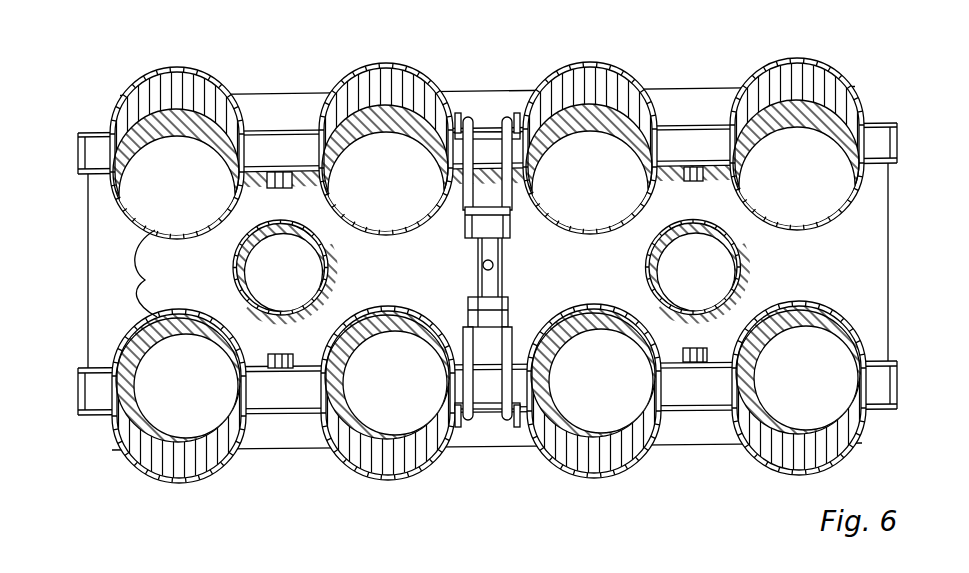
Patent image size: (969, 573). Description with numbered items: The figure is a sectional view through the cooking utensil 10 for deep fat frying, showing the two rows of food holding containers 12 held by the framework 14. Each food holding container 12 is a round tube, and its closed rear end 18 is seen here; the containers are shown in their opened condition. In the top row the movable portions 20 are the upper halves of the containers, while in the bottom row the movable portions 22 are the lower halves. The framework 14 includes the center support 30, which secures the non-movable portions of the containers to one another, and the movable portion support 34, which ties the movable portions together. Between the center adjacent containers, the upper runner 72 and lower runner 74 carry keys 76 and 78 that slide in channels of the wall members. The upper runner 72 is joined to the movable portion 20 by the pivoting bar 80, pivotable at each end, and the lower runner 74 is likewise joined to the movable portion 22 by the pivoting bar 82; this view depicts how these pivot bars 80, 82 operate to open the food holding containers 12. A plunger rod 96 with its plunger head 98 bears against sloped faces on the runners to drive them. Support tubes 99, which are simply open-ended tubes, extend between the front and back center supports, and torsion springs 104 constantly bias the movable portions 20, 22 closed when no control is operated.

The cooking utensil 10 is at (753, 33).
The food holding containers 12 is at (631, 60).
The framework 14 is at (722, 124).
The closed rear ends 18 is at (830, 127).
The movable portions 20 is at (383, 64).
The movable portions 22 is at (154, 273).
The center support 30 is at (865, 283).
The movable portion support 34 is at (247, 100).
The upper runner 72 is at (505, 225).
The lower runner 74 is at (507, 305).
The key 76 is at (490, 225).
The key 78 is at (480, 302).
The pivoting bar 80 is at (500, 125).
The pivoting bar 82 is at (507, 416).
The plunger rod 96 is at (497, 266).
The plunger head 98 is at (480, 270).
The support tubes 99 is at (322, 264).
The torsion springs 104 is at (272, 172).